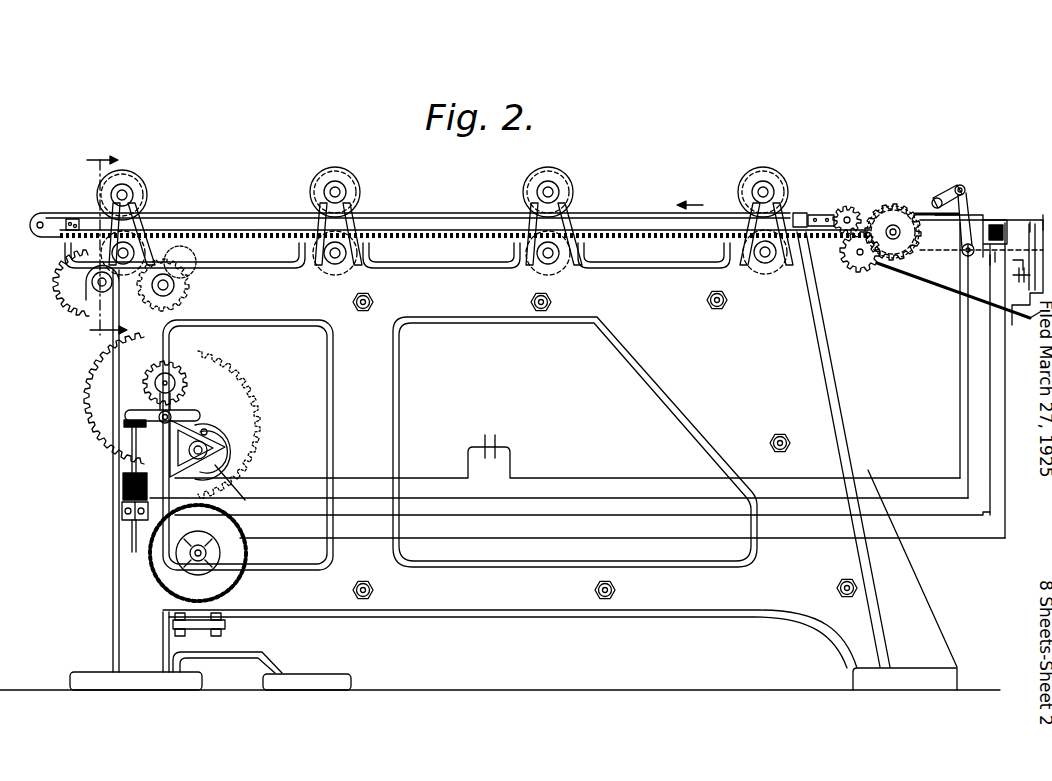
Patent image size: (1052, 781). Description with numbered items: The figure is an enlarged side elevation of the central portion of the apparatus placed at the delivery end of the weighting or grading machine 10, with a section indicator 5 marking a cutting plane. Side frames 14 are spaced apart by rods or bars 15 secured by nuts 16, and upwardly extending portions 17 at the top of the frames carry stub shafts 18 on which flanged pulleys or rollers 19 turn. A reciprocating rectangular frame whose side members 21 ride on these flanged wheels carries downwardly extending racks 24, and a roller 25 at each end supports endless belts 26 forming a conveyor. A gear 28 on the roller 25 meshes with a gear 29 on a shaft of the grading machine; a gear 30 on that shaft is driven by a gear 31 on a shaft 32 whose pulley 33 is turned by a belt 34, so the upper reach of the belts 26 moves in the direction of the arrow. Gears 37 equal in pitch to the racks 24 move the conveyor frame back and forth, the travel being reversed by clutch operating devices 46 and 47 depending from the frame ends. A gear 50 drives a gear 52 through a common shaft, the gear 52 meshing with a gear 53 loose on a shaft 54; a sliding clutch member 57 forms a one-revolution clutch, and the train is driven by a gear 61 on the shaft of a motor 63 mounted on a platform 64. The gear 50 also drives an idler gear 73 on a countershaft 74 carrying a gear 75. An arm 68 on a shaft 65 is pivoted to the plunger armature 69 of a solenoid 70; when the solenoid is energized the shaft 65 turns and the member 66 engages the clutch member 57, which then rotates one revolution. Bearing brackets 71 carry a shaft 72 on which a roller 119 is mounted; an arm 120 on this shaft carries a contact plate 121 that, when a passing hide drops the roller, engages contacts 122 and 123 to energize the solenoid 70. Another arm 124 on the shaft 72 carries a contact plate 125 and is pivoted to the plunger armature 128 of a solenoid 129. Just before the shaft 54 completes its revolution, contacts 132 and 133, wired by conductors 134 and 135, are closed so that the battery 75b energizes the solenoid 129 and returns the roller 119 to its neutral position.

The section line 5- 5 is at (105, 251).
The weighting or grading machine 10 is at (1013, 305).
The side frames 14 is at (813, 392).
The rods or bars 15 is at (714, 305).
The nuts 16 is at (792, 445).
The upwardly extending portions 17 is at (145, 238).
The stub shafts 18 is at (128, 192).
The flanged pulleys or rollers 19 is at (122, 170).
The side members 21 is at (637, 217).
The racks 24 is at (410, 238).
The roller 25 is at (42, 236).
The endless belts 26 is at (478, 214).
The gear 28 is at (847, 205).
The gear 29 is at (860, 264).
The gear 30 is at (873, 270).
The gear 31 is at (890, 203).
The shaft 32 is at (983, 257).
The pulley 33 is at (897, 243).
The belt 34 is at (927, 212).
The gears 37 is at (77, 287).
The clutch operating device 46 is at (68, 220).
The clutch operating device 47 is at (797, 240).
The gear 50 is at (93, 373).
The gear 52 is at (140, 384).
The gear 53 is at (233, 463).
The shaft 54 is at (207, 449).
The sliding clutch member 57 is at (213, 436).
The gear 61 is at (187, 540).
The motor 63 is at (133, 540).
The platform 64 is at (225, 625).
The shaft 65 is at (160, 418).
The clutch member 66 is at (190, 405).
The arm 68 is at (170, 457).
The plunger armature 69 is at (132, 463).
The solenoid 70 is at (123, 497).
The bearing brackets 71 is at (1023, 223).
The shaft 72 is at (963, 190).
The idler gear 73 is at (185, 283).
The countershaft 74 is at (185, 262).
The gear 75 is at (180, 259).
The battery 75b is at (995, 262).
The roller 119 is at (933, 207).
The arm 120 is at (990, 222).
The contact plate 121 is at (990, 265).
The contact pin 122 is at (966, 243).
The contact pin 123 is at (962, 248).
The arm 124 is at (1023, 263).
The contact plate 125 is at (1026, 324).
The plunger armature 128 is at (1043, 215).
The solenoid 129 is at (1030, 223).
The contact 132 is at (220, 470).
The contact 133 is at (206, 434).
The conductor 134 is at (590, 513).
The conductor 135 is at (530, 538).